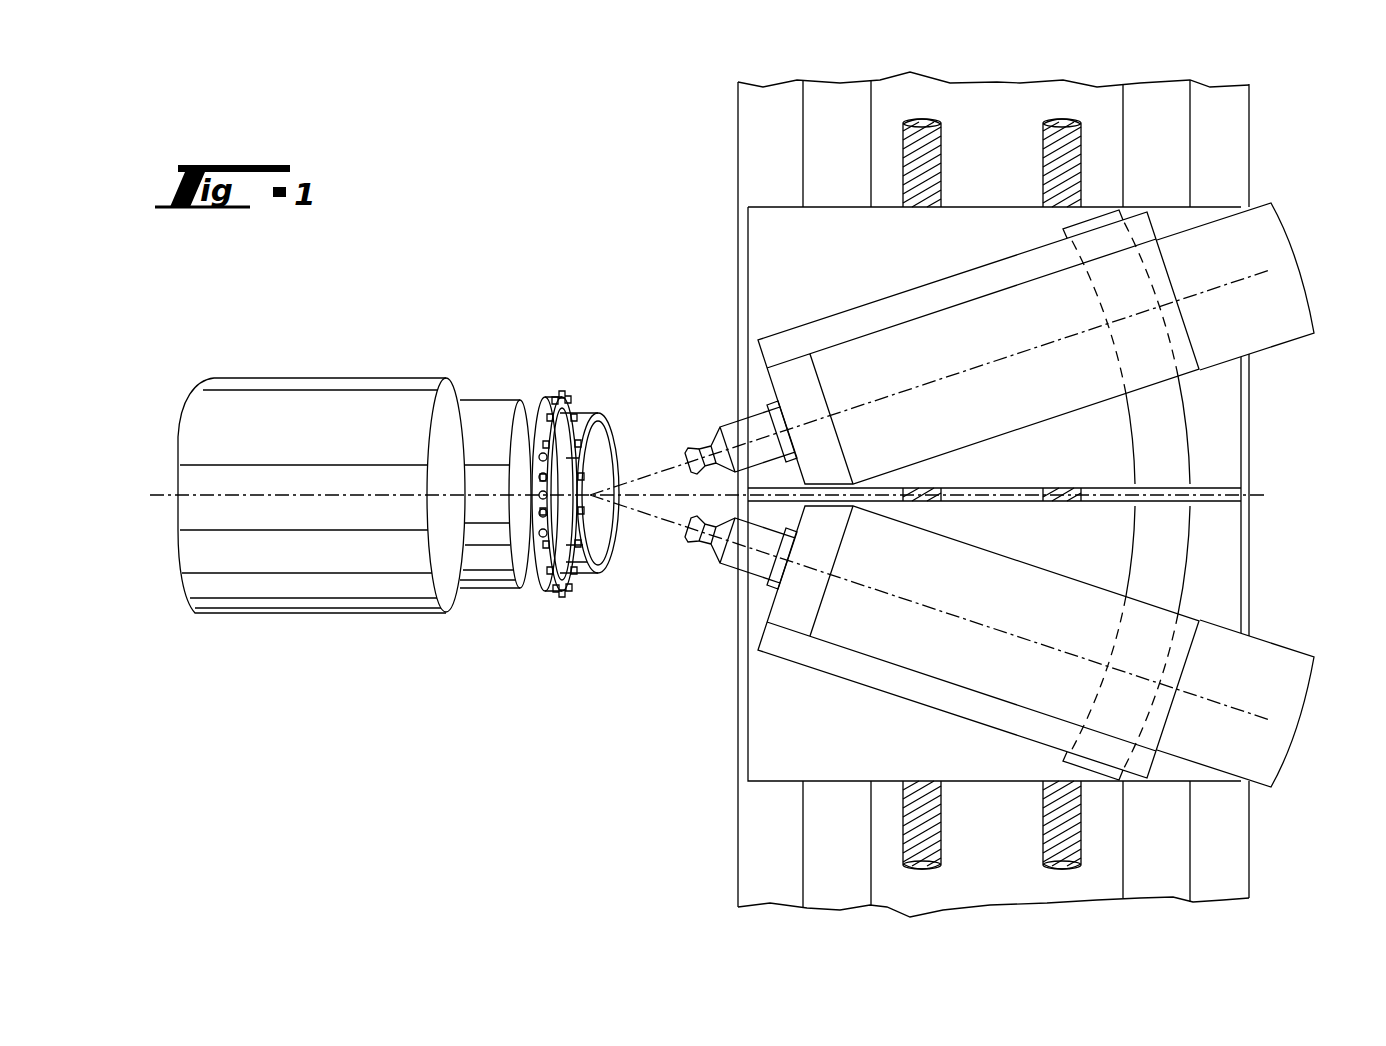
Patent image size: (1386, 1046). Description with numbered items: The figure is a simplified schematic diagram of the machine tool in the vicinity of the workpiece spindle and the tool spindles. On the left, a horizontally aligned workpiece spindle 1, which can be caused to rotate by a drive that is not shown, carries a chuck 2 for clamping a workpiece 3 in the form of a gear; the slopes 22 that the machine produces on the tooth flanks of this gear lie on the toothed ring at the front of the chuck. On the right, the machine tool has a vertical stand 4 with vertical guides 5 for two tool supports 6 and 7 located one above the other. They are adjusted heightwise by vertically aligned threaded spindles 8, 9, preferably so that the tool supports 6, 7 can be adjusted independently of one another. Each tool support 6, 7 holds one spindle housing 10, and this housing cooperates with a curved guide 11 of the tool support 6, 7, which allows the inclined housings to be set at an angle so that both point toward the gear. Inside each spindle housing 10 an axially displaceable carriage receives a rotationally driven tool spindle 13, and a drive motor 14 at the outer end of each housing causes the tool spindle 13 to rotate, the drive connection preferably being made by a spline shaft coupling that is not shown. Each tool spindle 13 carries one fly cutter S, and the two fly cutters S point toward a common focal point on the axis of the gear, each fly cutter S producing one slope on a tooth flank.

The workpiece spindle 1 is at (378, 553).
The chuck 2 is at (505, 565).
The slopes 22 is at (568, 408).
The workpiece 3 is at (573, 430).
The vertical stand 4 is at (1228, 155).
The vertical guides 5 is at (840, 135).
The tool support 6 is at (1225, 462).
The tool support 7 is at (1211, 606).
The threaded spindle 8 is at (922, 143).
The threaded spindle 9 is at (1058, 140).
The spindle housing 10 is at (848, 325).
The curved guide 11 is at (1162, 428).
The tool spindle 13 is at (757, 420).
The drive motor 14 is at (1253, 304).
The fly cutter S is at (708, 532).